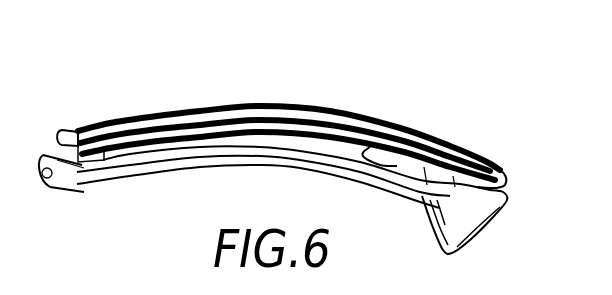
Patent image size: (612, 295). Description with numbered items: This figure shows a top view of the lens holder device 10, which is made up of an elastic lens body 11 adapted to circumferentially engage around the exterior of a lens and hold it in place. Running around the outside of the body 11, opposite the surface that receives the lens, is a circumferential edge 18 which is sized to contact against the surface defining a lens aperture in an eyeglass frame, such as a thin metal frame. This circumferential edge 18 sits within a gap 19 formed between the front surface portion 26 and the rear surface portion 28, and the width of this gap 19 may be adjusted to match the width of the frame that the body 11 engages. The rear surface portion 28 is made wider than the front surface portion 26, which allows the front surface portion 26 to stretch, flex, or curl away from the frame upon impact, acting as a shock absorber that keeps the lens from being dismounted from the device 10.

The lens holder device 10 is at (298, 99).
The lens body 11 is at (482, 157).
The circumferential edge 18 is at (370, 147).
The gap 19 is at (488, 190).
The front surface portion 26 is at (73, 137).
The rear surface portion 28 is at (67, 180).